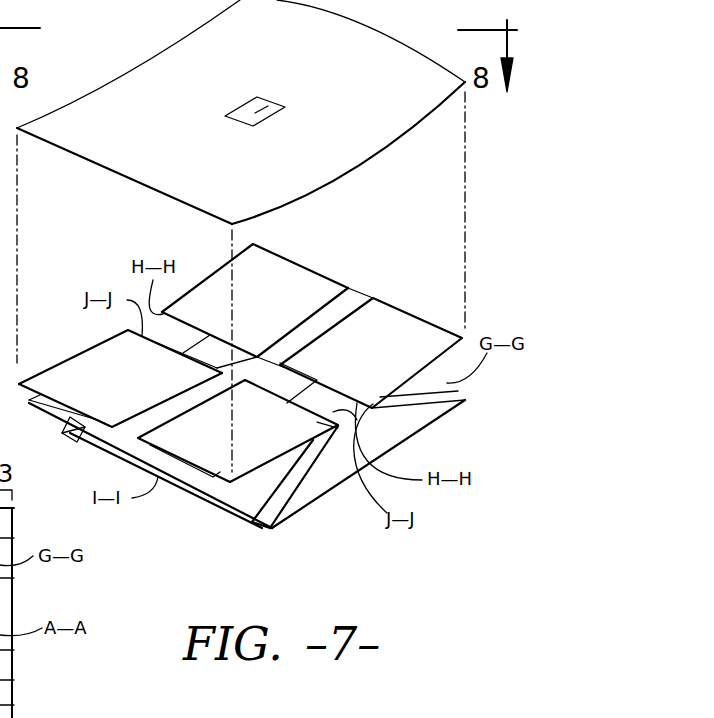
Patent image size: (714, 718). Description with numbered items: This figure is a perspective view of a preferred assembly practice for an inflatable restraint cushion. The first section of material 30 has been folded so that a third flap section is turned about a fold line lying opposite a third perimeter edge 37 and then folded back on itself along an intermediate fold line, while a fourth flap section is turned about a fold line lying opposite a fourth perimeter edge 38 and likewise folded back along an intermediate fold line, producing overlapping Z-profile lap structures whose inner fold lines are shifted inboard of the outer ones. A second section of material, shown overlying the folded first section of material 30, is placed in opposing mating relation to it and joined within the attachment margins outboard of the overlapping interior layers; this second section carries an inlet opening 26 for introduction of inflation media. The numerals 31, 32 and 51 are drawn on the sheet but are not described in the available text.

The inlet opening 26 is at (267, 103).
The first section of material 30 is at (365, 530).
The base plate 31 is at (268, 465).
The contact plate 32 is at (42, 372).
The third perimeter edge 37 is at (290, 258).
The fourth perimeter edge 38 is at (200, 477).
The element of adjacent figure 51 is at (36, 717).